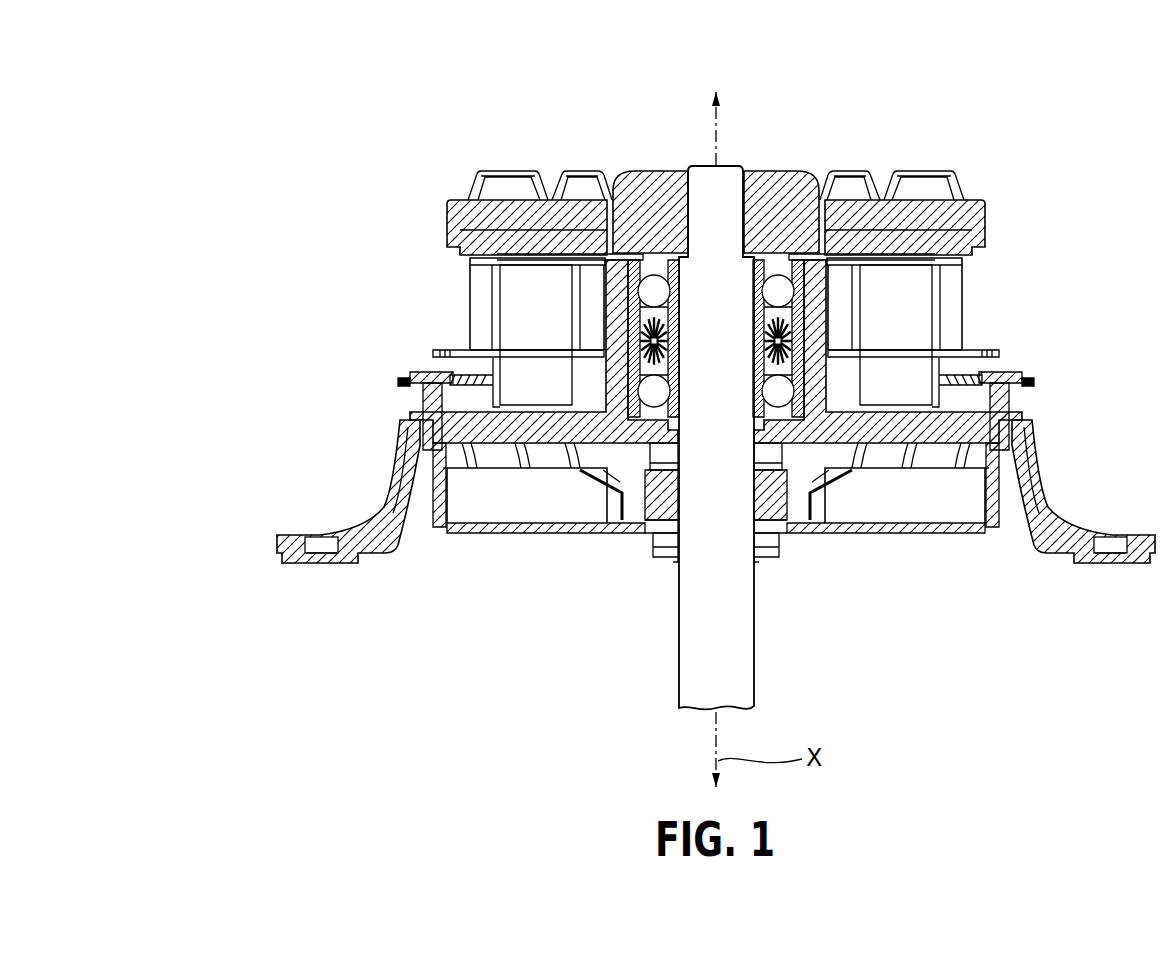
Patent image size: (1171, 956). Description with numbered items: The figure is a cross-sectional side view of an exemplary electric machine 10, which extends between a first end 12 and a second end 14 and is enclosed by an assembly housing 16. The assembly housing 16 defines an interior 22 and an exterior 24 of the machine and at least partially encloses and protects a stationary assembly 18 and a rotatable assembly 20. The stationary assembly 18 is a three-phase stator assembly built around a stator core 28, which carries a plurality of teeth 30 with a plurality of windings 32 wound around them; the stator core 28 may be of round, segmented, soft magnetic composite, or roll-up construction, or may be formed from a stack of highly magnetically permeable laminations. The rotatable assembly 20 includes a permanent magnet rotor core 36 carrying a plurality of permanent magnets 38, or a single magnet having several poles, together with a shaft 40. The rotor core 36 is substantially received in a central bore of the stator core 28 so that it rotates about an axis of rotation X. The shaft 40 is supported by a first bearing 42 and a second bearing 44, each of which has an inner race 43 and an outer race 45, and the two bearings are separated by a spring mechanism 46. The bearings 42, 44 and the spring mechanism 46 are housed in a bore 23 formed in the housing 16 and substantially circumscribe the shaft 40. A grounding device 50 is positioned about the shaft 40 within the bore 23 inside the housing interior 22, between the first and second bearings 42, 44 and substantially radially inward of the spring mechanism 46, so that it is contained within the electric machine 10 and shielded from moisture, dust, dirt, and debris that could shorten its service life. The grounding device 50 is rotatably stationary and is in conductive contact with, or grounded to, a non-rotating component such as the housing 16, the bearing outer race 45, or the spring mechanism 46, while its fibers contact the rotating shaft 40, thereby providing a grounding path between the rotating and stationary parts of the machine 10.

The electric machine 10 is at (681, 395).
The first end 12 is at (704, 179).
The second end 14 is at (681, 537).
The assembly housing 16 is at (1032, 440).
The stationary assembly 18 is at (714, 330).
The rotatable assembly 20 is at (747, 179).
The interior 22 is at (716, 419).
The bore 23 is at (823, 493).
The exterior 24 is at (393, 457).
The stator core 28 is at (500, 272).
The teeth 30 is at (527, 303).
The windings 32 is at (483, 321).
The permanent magnet rotor core 36 is at (563, 237).
The permanent magnets 38 is at (858, 237).
The shaft 40 is at (695, 643).
The first bearing 42 is at (635, 348).
The inner race 43 is at (776, 369).
The second bearing 44 is at (630, 412).
The outer race 45 is at (780, 278).
The spring mechanism 46 is at (668, 278).
The grounding device 50 is at (757, 384).